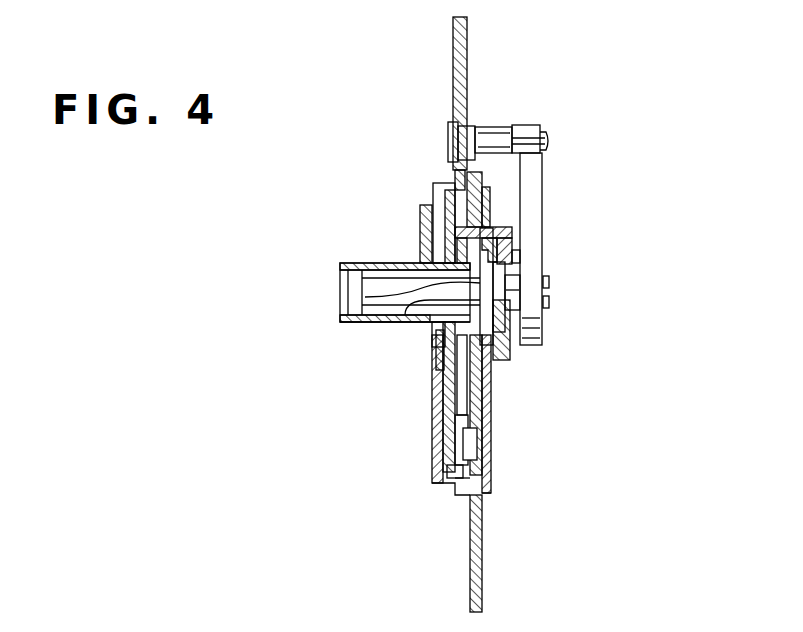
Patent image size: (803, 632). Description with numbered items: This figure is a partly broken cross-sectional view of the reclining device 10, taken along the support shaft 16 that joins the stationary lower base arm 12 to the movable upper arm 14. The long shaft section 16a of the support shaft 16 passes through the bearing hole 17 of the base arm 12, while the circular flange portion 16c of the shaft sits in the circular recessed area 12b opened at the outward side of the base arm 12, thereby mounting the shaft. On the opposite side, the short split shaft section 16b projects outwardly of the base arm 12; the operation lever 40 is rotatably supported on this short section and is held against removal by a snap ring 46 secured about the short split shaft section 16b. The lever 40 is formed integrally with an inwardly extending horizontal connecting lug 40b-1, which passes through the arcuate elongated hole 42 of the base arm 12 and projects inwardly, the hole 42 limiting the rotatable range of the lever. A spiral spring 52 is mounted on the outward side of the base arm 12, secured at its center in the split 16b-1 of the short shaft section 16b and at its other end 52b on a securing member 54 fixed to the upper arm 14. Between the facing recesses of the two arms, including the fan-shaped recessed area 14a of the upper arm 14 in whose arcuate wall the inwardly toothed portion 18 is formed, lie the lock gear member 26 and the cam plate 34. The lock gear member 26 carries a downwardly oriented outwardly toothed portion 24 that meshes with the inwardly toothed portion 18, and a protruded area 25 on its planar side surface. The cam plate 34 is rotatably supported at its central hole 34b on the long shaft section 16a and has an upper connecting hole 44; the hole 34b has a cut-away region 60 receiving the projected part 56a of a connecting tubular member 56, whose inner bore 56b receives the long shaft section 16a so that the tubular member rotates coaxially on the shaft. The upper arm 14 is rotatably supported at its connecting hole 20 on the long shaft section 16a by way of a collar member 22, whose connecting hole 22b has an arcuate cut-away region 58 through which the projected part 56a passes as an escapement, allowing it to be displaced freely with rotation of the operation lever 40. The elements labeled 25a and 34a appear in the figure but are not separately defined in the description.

The reclining device 10 is at (640, 78).
The lower base arm 12 is at (483, 560).
The circular recessed area 12b is at (500, 366).
The upper arm 14 is at (468, 52).
The fan-shaped recessed area 14a is at (446, 386).
The support shaft 16 is at (375, 330).
The long shaft section 16a is at (400, 330).
The short split shaft section 16b is at (552, 278).
The split 16b-1 is at (550, 294).
The circular flange portion 16c is at (553, 310).
The bearing hole 17 is at (515, 322).
The inwardly toothed portion 18 is at (447, 471).
The connecting hole 20 is at (437, 231).
The collar member 22 is at (422, 379).
The connecting hole 22b is at (436, 331).
The outwardly toothed portion 24 is at (456, 481).
The protruded area 25 is at (458, 440).
The spring seat 25a is at (492, 412).
The lock gear member 26 is at (495, 386).
The cam plate 34 is at (452, 190).
The spacer lower part 34a is at (462, 418).
The central hole 34b is at (380, 296).
The operation lever 40 is at (508, 350).
The connecting lug 40b-1 is at (520, 233).
The arcuate elongated hole 42 is at (488, 212).
The upper connecting hole 44 is at (425, 216).
The snap ring 46 is at (520, 258).
The spiral spring 52 is at (548, 333).
The another end of spiral spring 52b is at (530, 125).
The securing member 54 is at (548, 138).
The connecting tubular member 56 is at (333, 337).
The projected part 56a is at (418, 263).
The inner bore 56b is at (352, 316).
The arcuate cut-away region 58 is at (352, 268).
The cut-away region 60 is at (355, 285).